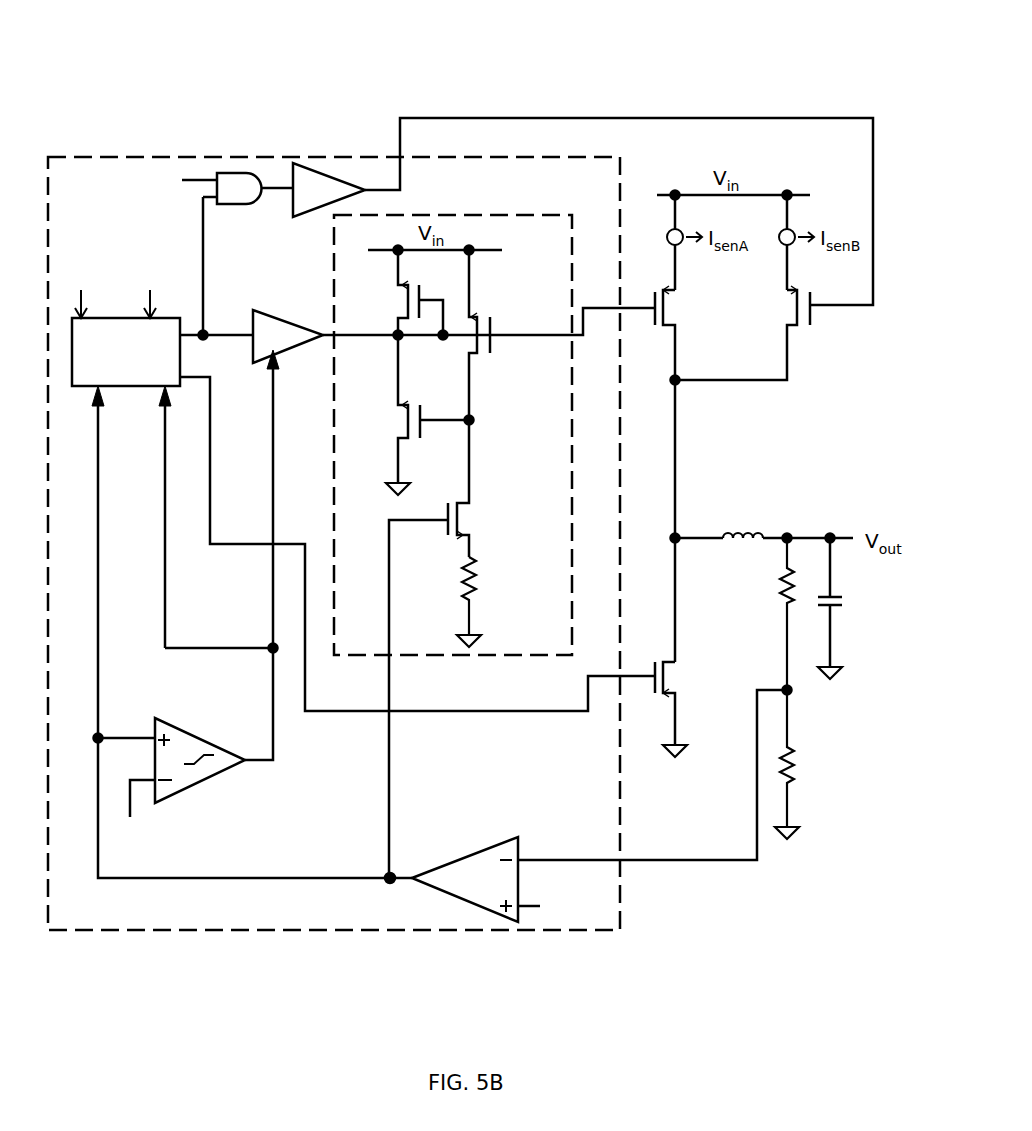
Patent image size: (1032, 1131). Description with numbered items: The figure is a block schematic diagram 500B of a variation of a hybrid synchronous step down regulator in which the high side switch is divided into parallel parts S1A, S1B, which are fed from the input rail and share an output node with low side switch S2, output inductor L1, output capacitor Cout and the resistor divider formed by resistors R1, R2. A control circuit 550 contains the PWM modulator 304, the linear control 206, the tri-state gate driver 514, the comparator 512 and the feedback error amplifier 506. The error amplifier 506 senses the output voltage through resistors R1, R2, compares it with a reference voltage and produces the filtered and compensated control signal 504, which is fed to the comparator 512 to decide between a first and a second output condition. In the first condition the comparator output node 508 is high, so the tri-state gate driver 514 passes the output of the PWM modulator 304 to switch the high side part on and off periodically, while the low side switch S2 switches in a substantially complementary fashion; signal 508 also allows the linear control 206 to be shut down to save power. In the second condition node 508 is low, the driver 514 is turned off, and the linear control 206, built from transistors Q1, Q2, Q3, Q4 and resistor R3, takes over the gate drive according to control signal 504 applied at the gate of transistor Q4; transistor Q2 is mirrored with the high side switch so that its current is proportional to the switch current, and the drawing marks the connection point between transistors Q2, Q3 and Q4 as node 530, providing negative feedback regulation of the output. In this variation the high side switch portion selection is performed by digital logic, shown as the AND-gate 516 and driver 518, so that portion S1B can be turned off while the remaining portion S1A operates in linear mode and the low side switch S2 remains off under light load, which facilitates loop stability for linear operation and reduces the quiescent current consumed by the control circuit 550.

The block schematic diagram 500B is at (778, 33).
The control circuit 550 is at (334, 543).
The linear control 206 is at (545, 248).
The PWM modulator 304 is at (158, 495).
The AND-gate 516 is at (232, 185).
The driver 518 is at (318, 186).
The tri-state gate driver 514 is at (282, 300).
The node 508 is at (274, 759).
The comparator 512 is at (183, 738).
The node 530 is at (471, 418).
The control signal 504 is at (378, 876).
The feedback error amplifier 506 is at (494, 852).
The transistor Q1 is at (410, 295).
The transistor Q2 is at (490, 332).
The transistor Q3 is at (421, 415).
The transistor Q4 is at (443, 649).
The resistor R3 is at (475, 600).
The high side switch part S1A is at (685, 333).
The high side switch part S1B is at (742, 333).
The low side switch S2 is at (678, 709).
The output inductor L1 is at (744, 532).
The resistor R1 is at (780, 590).
The resistor R2 is at (792, 782).
The output capacitor Cout is at (844, 600).